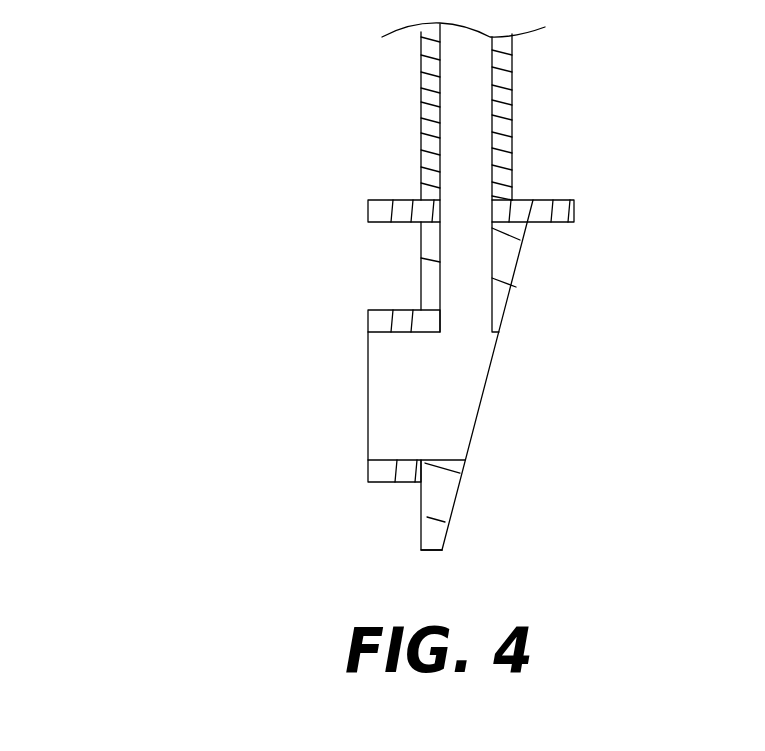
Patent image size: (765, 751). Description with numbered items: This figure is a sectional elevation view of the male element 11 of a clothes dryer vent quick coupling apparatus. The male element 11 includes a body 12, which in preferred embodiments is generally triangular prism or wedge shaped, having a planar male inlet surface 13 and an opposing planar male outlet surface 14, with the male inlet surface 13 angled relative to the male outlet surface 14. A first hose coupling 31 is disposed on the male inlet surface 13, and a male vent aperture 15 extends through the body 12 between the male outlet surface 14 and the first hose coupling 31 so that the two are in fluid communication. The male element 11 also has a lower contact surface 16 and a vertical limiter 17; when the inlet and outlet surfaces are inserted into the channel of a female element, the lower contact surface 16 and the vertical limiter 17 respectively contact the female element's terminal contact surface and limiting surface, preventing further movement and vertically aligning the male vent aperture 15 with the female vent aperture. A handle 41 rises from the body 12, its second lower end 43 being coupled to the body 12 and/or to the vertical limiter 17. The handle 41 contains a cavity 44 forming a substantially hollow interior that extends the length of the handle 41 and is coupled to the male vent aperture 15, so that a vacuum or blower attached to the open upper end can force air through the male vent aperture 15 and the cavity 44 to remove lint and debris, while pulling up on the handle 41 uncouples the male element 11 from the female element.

The male element 11 is at (194, 85).
The body 12 is at (510, 252).
The male inlet surface 13 is at (414, 252).
The male outlet surface 14 is at (527, 285).
The male vent aperture 15 is at (473, 385).
The lower contact surface 16 is at (431, 560).
The vertical limiter 17 is at (405, 212).
The first hose coupling 31 is at (378, 322).
The handle 41 is at (430, 108).
The second lower end 43 is at (458, 112).
The cavity 44 is at (466, 128).